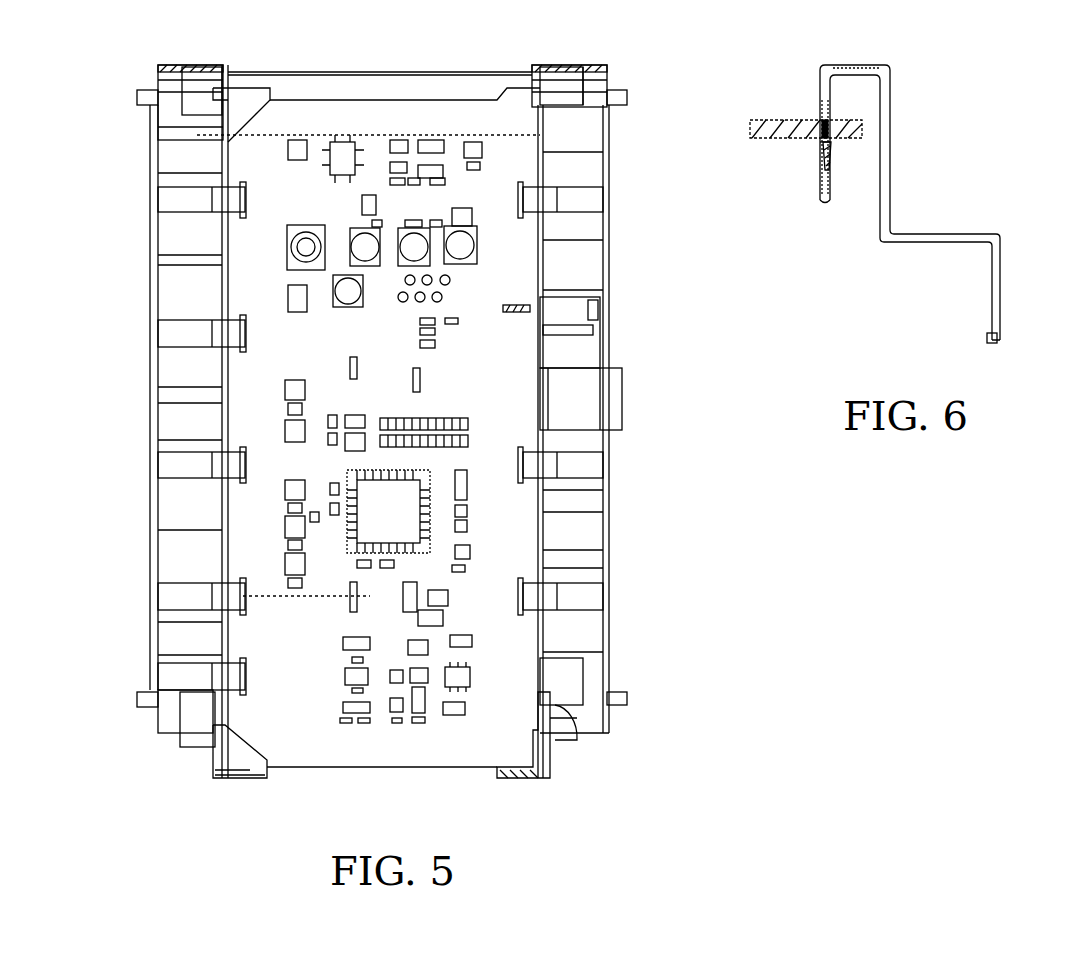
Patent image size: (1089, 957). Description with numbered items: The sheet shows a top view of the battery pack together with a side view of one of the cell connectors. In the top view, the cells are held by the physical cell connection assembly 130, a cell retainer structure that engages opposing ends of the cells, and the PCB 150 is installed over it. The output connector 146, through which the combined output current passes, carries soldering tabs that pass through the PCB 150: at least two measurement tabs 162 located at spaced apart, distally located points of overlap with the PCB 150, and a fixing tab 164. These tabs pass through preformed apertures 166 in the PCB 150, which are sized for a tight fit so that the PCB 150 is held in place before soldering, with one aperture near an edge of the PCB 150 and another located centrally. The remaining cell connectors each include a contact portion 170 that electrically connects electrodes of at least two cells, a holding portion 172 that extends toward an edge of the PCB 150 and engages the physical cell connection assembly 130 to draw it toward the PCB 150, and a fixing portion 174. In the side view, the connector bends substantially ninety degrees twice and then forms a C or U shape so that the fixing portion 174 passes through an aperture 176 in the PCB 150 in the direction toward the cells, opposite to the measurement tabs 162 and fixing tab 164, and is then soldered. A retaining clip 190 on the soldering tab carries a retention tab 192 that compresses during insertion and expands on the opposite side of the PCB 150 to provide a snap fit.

In FIG. 5, the physical cell connection assembly 130 is at (155, 680).
In FIG. 5, the output connector 146 is at (582, 310).
In FIG. 5, the PCB 150 is at (398, 108).
In FIG. 6, the PCB 150 is at (760, 127).
In FIG. 5, the measurement tabs 162 is at (518, 305).
In FIG. 5, the fixing tab 164 is at (353, 362).
In FIG. 5, the preformed apertures 166 is at (523, 310).
In FIG. 6, the contact portion 170 is at (997, 342).
In FIG. 5, the holding portion 172 is at (593, 465).
In FIG. 6, the holding portion 172 is at (997, 250).
In FIG. 5, the fixing portion 174 is at (520, 465).
In FIG. 6, the fixing portion 174 is at (822, 100).
In FIG. 5, the aperture 176 is at (522, 607).
In FIG. 6, the aperture 176 is at (818, 126).
In FIG. 6, the retaining clip 190 is at (815, 165).
In FIG. 6, the retention tab 192 is at (828, 145).